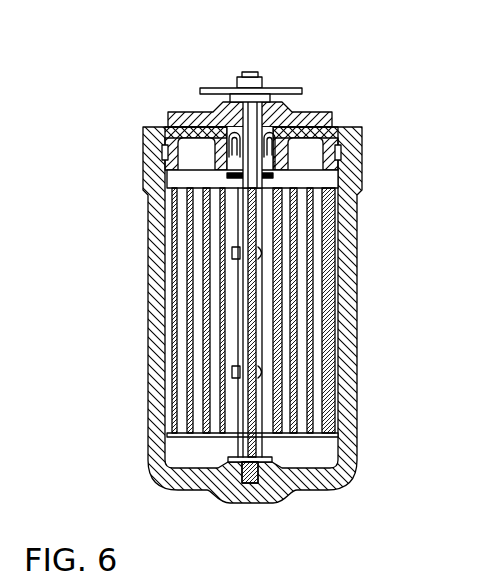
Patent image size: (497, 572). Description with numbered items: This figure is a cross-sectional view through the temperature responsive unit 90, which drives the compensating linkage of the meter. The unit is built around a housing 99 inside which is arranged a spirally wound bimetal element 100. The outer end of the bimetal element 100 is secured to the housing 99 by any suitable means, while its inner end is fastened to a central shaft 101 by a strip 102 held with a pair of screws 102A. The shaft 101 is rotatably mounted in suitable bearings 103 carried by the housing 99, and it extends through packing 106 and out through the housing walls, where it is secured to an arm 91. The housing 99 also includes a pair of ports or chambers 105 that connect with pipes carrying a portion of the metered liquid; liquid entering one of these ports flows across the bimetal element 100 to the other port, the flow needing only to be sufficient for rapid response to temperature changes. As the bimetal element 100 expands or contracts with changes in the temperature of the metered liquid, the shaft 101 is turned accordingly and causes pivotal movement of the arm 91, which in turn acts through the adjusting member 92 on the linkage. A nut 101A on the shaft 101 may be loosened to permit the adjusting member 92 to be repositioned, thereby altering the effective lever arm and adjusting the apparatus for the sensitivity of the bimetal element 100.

The temperature responsive unit 90 is at (271, 270).
The arm 91 is at (233, 96).
The adjusting member 92 is at (302, 95).
The housing 99 is at (353, 235).
The bimetal element 100 is at (310, 292).
The shaft 101 is at (246, 73).
The nut 101A is at (263, 84).
The strip 102 is at (264, 338).
The screws 102A is at (262, 253).
The bearings 103 is at (268, 163).
The ports or chambers 105 is at (192, 156).
The packing 106 is at (216, 142).